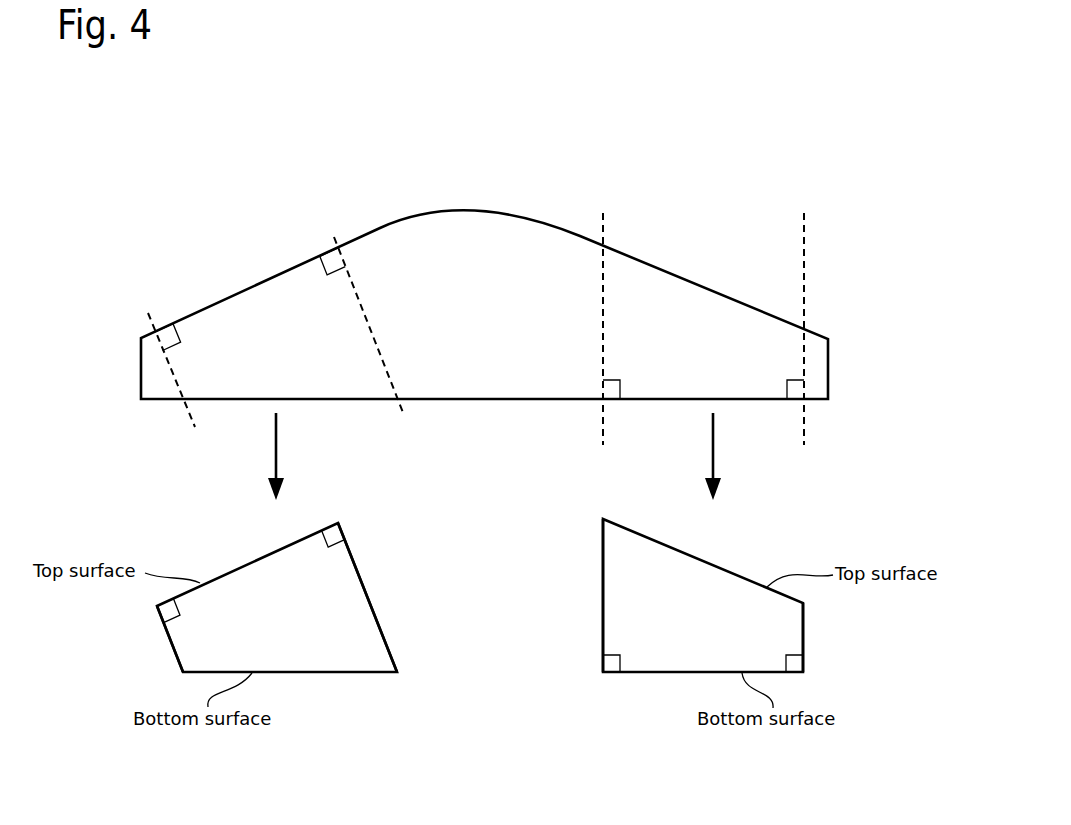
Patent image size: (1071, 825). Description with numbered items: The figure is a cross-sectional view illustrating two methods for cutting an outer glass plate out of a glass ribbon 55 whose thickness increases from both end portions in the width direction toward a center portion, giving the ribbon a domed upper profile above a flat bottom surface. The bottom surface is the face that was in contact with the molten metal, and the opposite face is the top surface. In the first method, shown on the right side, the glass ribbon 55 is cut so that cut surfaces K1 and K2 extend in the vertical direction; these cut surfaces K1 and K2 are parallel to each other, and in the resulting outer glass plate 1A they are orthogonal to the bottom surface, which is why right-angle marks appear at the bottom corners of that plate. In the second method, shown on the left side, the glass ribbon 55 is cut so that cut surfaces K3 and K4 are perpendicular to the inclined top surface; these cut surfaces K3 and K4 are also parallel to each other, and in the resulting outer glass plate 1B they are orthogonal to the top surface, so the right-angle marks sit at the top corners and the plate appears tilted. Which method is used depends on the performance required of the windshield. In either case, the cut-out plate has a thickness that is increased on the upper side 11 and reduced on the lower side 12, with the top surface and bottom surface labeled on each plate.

The glass ribbon 55 is at (485, 225).
The cut surface K1 is at (604, 316).
The cut surface K2 is at (800, 316).
The cut surface K3 is at (362, 311).
The cut surface K4 is at (166, 354).
The outer glass plate 1A is at (677, 567).
The outer glass plate 1B is at (237, 585).
The upper side 11 is at (368, 595).
The lower side 12 is at (168, 642).